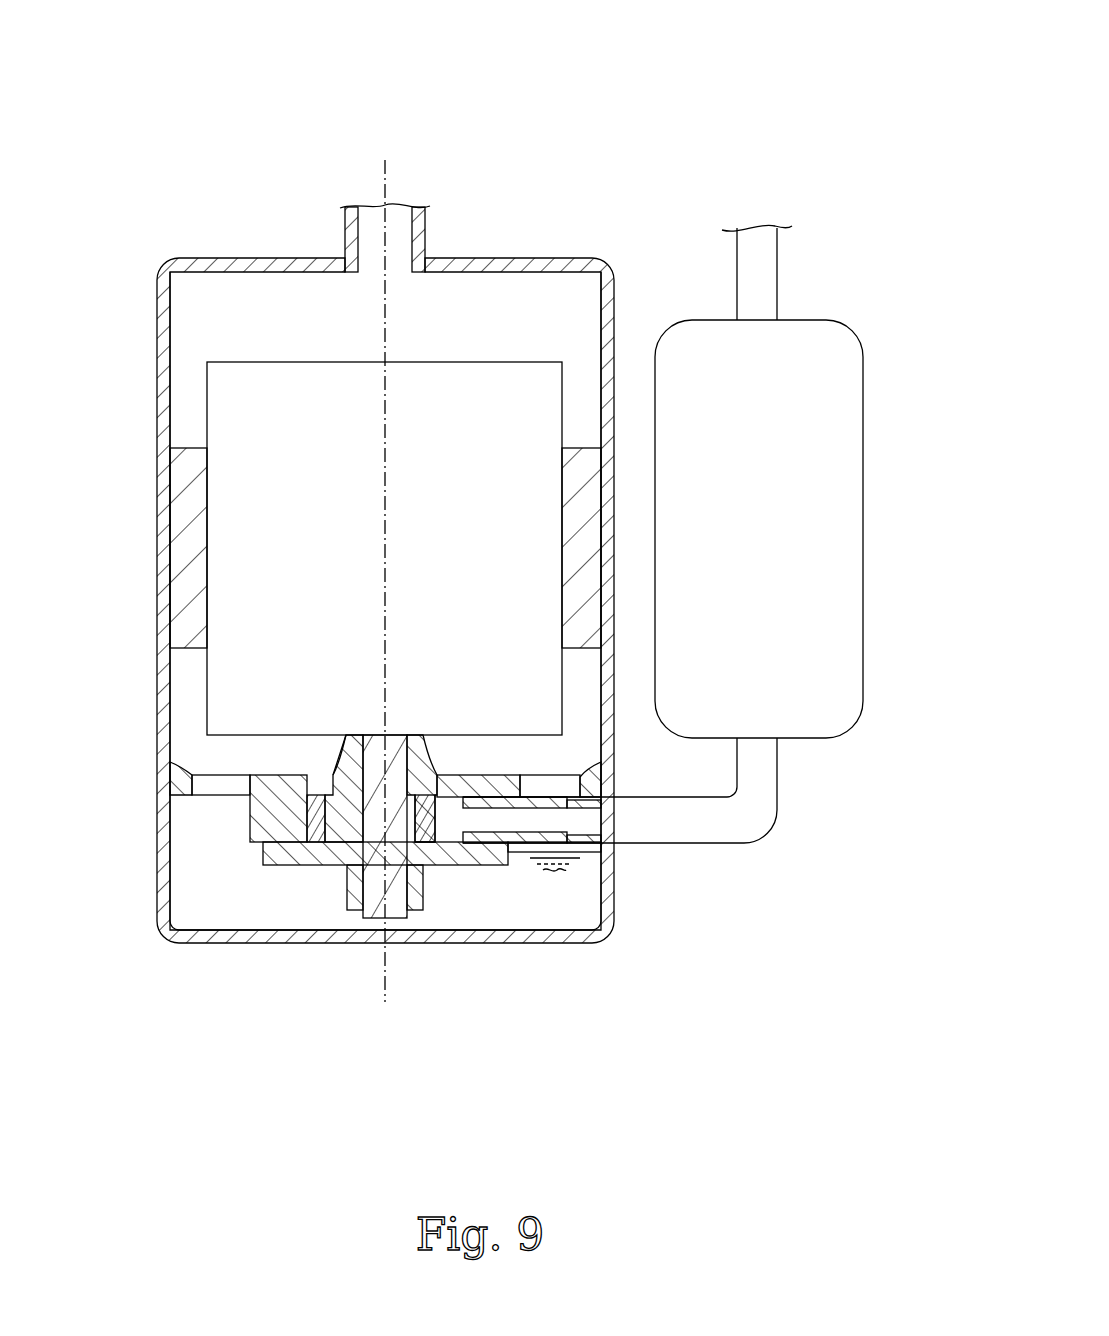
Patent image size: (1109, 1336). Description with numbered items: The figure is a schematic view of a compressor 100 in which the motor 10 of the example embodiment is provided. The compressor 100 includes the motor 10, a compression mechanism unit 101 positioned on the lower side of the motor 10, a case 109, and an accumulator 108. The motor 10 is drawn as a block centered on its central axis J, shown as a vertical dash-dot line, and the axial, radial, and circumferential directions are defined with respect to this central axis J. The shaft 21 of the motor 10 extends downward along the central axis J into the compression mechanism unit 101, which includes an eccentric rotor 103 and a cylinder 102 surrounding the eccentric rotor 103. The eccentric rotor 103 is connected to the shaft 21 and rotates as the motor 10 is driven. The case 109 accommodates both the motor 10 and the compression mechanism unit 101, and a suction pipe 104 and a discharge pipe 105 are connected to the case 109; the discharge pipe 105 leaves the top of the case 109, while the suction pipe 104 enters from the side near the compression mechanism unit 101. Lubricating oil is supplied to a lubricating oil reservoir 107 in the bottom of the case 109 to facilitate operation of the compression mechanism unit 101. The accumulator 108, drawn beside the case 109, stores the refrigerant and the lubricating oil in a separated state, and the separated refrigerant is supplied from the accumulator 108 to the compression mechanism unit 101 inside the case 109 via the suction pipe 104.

The compressor 100 is at (713, 107).
The motor 10 is at (262, 343).
The shaft 21 is at (397, 898).
The compression mechanism unit 101 is at (230, 818).
The cylinder 102 is at (278, 830).
The eccentric rotor 103 is at (322, 822).
The suction pipe 104 is at (683, 846).
The discharge pipe 105 is at (420, 230).
The lubricating oil reservoir 107 is at (508, 897).
The accumulator 108 is at (852, 277).
The case 109 is at (157, 388).
The central axis J is at (386, 315).